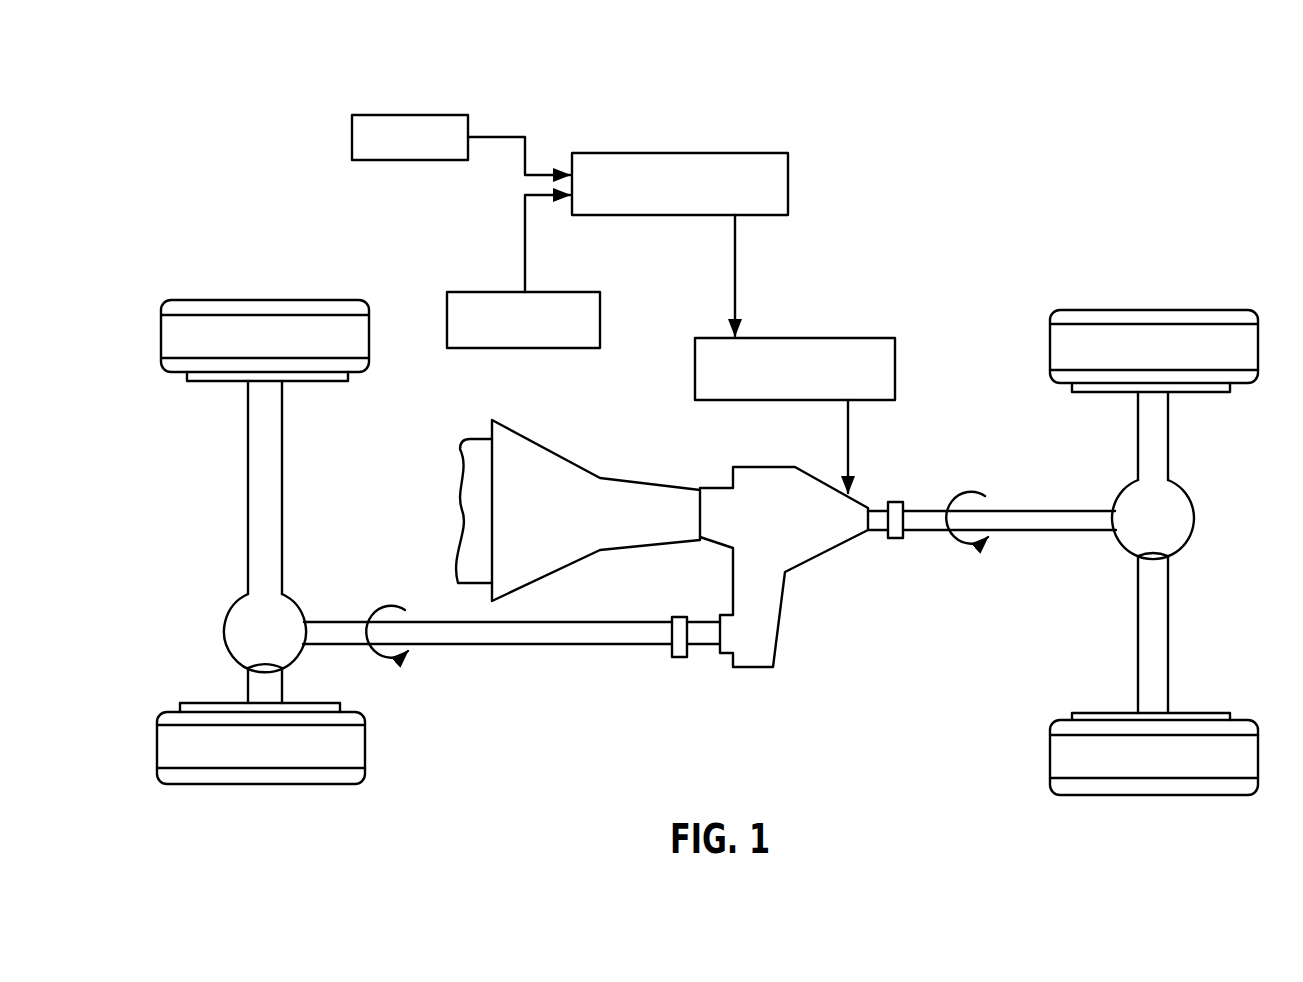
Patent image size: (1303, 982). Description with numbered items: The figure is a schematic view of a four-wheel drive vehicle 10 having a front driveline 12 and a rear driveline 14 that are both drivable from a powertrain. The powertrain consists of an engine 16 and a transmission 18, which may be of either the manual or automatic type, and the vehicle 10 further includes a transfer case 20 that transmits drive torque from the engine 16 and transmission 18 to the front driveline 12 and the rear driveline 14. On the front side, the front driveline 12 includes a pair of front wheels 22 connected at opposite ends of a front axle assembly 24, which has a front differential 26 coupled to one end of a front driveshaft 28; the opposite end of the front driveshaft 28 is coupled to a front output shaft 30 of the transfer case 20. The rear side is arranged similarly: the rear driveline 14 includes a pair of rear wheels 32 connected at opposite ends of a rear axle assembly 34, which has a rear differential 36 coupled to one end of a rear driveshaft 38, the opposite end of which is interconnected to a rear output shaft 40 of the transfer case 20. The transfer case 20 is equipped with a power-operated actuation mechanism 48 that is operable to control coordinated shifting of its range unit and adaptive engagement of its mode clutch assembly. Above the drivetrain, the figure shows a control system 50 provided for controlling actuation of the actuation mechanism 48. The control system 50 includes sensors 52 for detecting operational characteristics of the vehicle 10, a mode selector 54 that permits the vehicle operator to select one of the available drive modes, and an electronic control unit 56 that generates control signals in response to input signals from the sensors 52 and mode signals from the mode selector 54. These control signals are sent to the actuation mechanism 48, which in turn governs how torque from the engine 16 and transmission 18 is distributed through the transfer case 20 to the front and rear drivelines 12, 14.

The four-wheel drive vehicle 10 is at (900, 230).
The front driveline 12 is at (332, 598).
The rear driveline 14 is at (1111, 590).
The engine 16 is at (476, 471).
The transmission 18 is at (579, 527).
The transfer case 20 is at (799, 524).
The front wheels 22 is at (235, 335).
The front axle assembly 24 is at (264, 538).
The front differential 26 is at (263, 632).
The front driveshaft 28 is at (552, 633).
The front output shaft 30 is at (707, 635).
The rear wheels 32 is at (1130, 335).
The rear axle assembly 34 is at (1150, 447).
The rear differential 36 is at (1162, 527).
The rear driveshaft 38 is at (1038, 525).
The rear output shaft 40 is at (877, 505).
The power-operated actuation mechanism 48 is at (882, 368).
The control system 50 is at (568, 116).
The sensors 52 is at (378, 122).
The mode selector 54 is at (588, 335).
The electronic control unit 56 is at (762, 178).